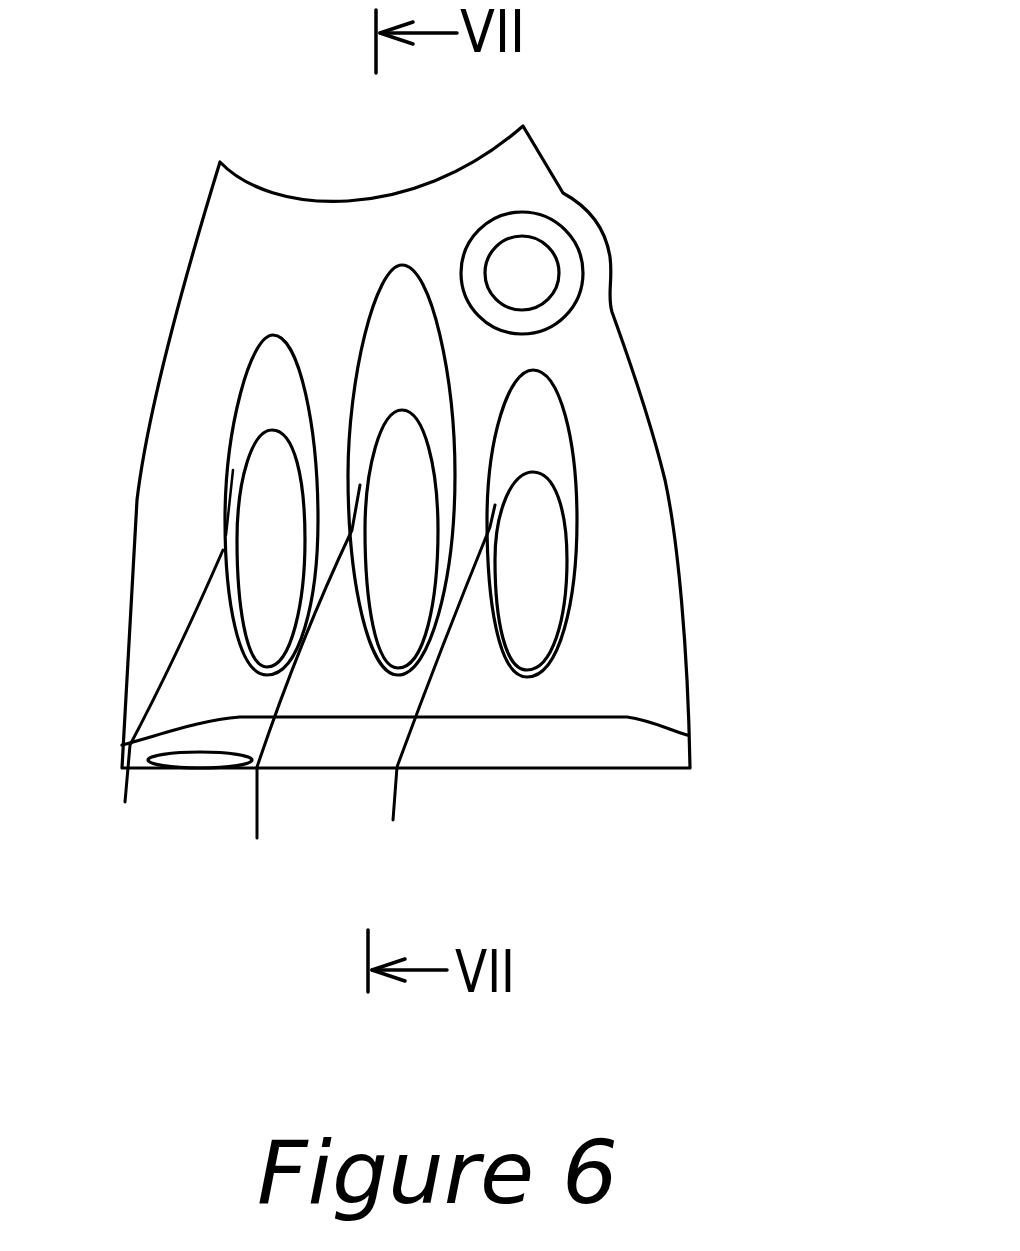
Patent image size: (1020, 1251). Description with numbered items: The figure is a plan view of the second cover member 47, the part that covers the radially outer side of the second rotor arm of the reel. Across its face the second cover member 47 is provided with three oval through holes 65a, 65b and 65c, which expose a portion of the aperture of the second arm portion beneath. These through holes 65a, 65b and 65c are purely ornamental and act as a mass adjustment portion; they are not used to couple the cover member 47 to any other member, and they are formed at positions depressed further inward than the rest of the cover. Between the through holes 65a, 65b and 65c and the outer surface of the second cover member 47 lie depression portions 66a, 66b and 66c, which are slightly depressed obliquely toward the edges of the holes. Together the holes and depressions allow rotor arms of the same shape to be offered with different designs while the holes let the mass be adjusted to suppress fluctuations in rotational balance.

The second cover member 47 is at (630, 596).
The through hole 65a is at (548, 490).
The through hole 65b is at (420, 432).
The through hole 65c is at (285, 447).
The depression portion 66a is at (436, 698).
The depression portion 66b is at (291, 697).
The depression portion 66c is at (145, 711).